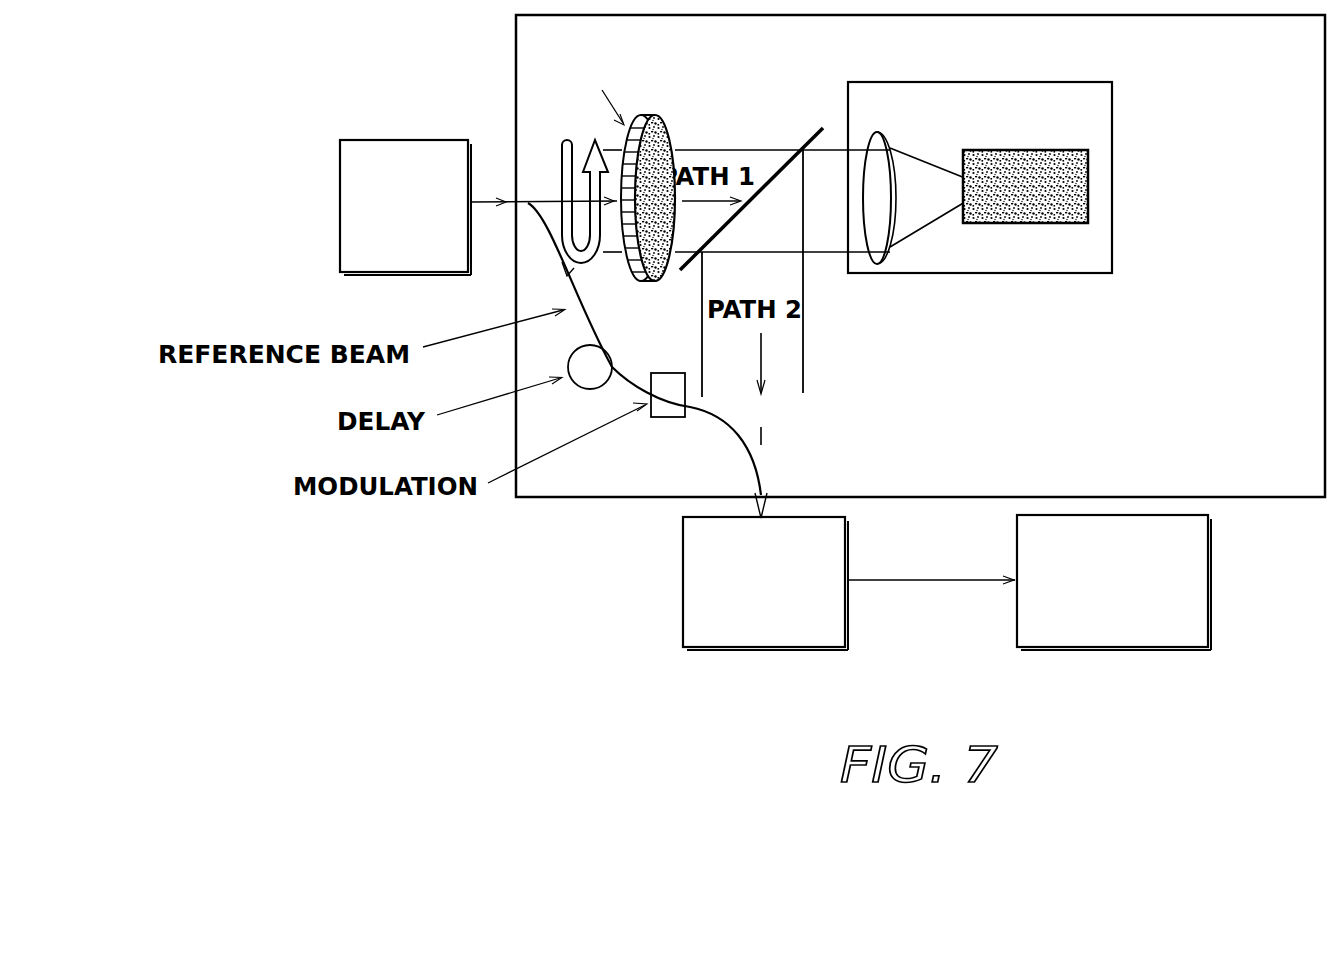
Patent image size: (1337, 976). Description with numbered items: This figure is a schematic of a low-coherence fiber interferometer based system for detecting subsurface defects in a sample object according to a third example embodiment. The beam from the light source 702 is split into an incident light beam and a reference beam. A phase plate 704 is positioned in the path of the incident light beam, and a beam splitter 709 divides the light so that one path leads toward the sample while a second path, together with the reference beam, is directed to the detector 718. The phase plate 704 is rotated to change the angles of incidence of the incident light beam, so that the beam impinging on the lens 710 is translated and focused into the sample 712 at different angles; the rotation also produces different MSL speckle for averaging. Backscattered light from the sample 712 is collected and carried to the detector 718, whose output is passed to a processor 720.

The light source 702 is at (340, 235).
The phase plate 704 is at (653, 117).
The beam splitter 709 is at (803, 148).
The lens 710 is at (880, 263).
The sample 712 is at (1088, 185).
The detector 718 is at (847, 633).
The processor 720 is at (1213, 577).